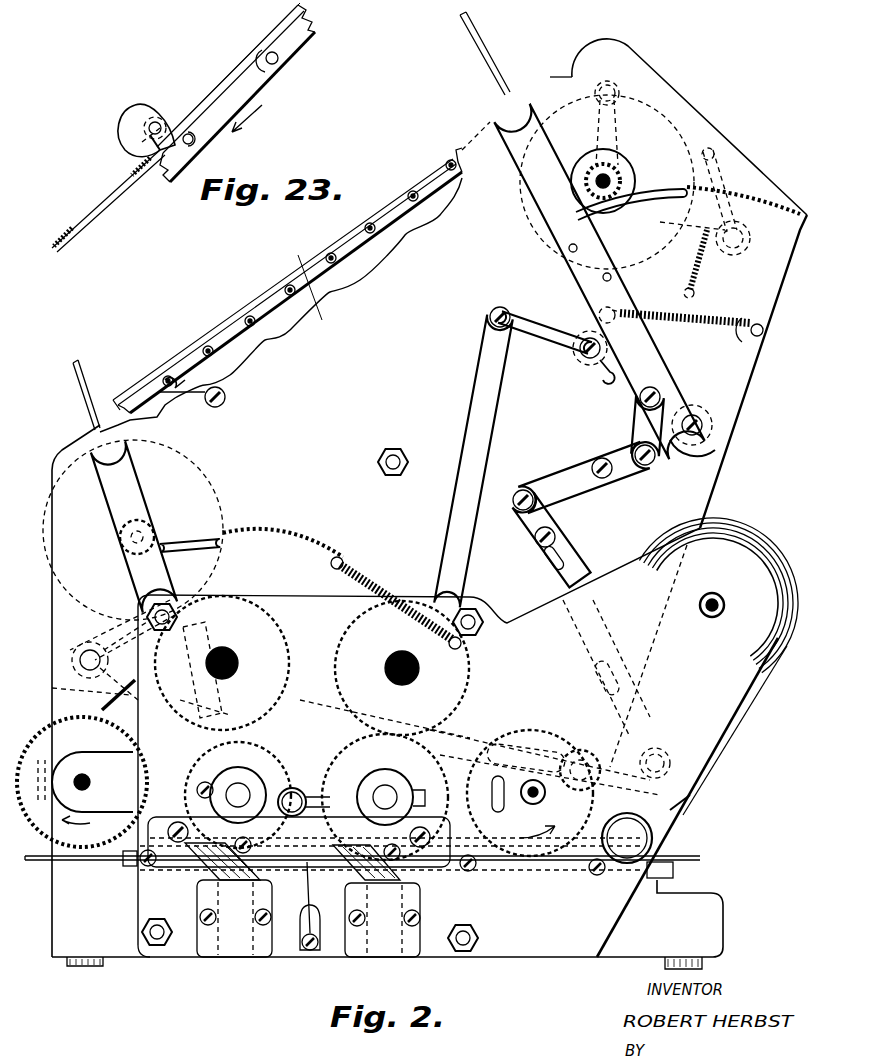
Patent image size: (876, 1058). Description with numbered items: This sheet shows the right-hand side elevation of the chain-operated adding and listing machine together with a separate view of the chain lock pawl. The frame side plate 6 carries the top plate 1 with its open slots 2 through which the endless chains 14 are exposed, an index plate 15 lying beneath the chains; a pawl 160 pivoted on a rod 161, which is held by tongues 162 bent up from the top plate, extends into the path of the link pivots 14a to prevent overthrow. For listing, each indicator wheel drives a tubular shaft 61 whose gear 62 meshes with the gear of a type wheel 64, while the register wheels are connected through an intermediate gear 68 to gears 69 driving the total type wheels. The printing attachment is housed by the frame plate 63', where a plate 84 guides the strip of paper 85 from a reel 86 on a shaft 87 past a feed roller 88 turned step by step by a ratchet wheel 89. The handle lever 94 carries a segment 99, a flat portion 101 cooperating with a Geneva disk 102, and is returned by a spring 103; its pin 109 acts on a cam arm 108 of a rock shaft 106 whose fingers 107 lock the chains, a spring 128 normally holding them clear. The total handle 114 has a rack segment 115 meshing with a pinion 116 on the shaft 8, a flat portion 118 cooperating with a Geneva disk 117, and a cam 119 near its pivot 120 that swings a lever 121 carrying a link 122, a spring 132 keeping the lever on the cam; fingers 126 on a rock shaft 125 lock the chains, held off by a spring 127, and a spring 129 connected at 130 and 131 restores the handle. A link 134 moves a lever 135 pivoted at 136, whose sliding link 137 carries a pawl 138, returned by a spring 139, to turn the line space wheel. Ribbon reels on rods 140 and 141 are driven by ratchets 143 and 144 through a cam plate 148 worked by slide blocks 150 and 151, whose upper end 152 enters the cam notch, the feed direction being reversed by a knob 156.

In FIG. 23, the top plate 1 is at (63, 238).
In FIG. 23, the open slots 2 is at (238, 70).
In FIG. 2, the side plate 6 is at (306, 277).
In FIG. 2, the shaft 8 is at (625, 180).
In FIG. 23, the endless chains 14 is at (271, 77).
In FIG. 2, the endless chains 14 is at (235, 330).
In FIG. 23, the cross bars or link pivots 14a is at (280, 59).
In FIG. 2, the index plate 15 is at (340, 270).
In FIG. 2, the tubular shaft 61 is at (240, 663).
In FIG. 2, the gear 62 is at (285, 643).
In FIG. 2, the frame plate 63' is at (689, 648).
In FIG. 2, the type wheel 64 is at (246, 778).
In FIG. 2, the intermediate gear 68 is at (420, 668).
In FIG. 2, the gear 69 is at (470, 668).
In FIG. 2, the plate 84 is at (95, 862).
In FIG. 2, the strip of paper 85 is at (752, 690).
In FIG. 2, the reel 86 is at (733, 525).
In FIG. 2, the shaft 87 is at (725, 603).
In FIG. 2, the feed roller 88 is at (675, 864).
In FIG. 2, the ratchet wheel 89 is at (660, 840).
In FIG. 2, the handle lever 94 is at (130, 468).
In FIG. 2, the segment 99 is at (288, 531).
In FIG. 2, the flat portion 101 is at (212, 540).
In FIG. 2, the Geneva disk 102 is at (152, 525).
In FIG. 2, the spring 103 is at (380, 574).
In FIG. 2, the rock shaft 106 is at (80, 660).
In FIG. 2, the fingers 107 is at (120, 640).
In FIG. 2, the cam arm 108 is at (225, 598).
In FIG. 2, the pin 109 is at (215, 640).
In FIG. 2, the handle 114 is at (525, 172).
In FIG. 2, the rack segment 115 is at (775, 200).
In FIG. 2, the pinion 116 is at (620, 168).
In FIG. 2, the Geneva disk 117 is at (590, 165).
In FIG. 2, the flat portion 118 is at (628, 212).
In FIG. 2, the cam 119 is at (713, 428).
In FIG. 2, the pivot 120 is at (703, 440).
In FIG. 2, the lever 121 is at (556, 332).
In FIG. 2, the link 122 is at (495, 400).
In FIG. 2, the rock shaft 125 is at (750, 238).
In FIG. 2, the fingers 126 is at (722, 158).
In FIG. 2, the spring 127 is at (710, 262).
In FIG. 2, the spring 128 is at (60, 690).
In FIG. 2, the spring 129 is at (697, 332).
In FIG. 2, the spring connection 130 is at (603, 312).
In FIG. 2, the spring connection 131 is at (765, 330).
In FIG. 2, the spring 132 is at (604, 374).
In FIG. 2, the link 134 is at (636, 418).
In FIG. 2, the lever 135 is at (586, 494).
In FIG. 2, the pivot 136 is at (600, 460).
In FIG. 2, the sliding link 137 is at (573, 546).
In FIG. 2, the pawl 138 is at (688, 820).
In FIG. 2, the spring 139 is at (662, 745).
In FIG. 2, the rod 140 is at (543, 796).
In FIG. 2, the rod 141 is at (92, 783).
In FIG. 2, the driving ratchet 143 is at (545, 866).
In FIG. 2, the driving ratchet 144 is at (42, 822).
In FIG. 2, the cam plate 148 is at (455, 864).
In FIG. 2, the cam slide block 150 is at (230, 940).
In FIG. 2, the cam slide block 151 is at (385, 945).
In FIG. 2, the upper end 152 is at (205, 872).
In FIG. 2, the knob 156 is at (295, 790).
In FIG. 23, the pawl 160 is at (124, 128).
In FIG. 23, the rod 161 is at (158, 122).
In FIG. 23, the tongues 162 is at (140, 142).